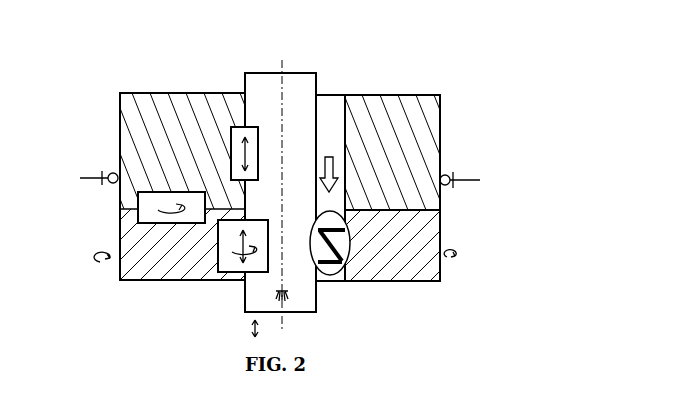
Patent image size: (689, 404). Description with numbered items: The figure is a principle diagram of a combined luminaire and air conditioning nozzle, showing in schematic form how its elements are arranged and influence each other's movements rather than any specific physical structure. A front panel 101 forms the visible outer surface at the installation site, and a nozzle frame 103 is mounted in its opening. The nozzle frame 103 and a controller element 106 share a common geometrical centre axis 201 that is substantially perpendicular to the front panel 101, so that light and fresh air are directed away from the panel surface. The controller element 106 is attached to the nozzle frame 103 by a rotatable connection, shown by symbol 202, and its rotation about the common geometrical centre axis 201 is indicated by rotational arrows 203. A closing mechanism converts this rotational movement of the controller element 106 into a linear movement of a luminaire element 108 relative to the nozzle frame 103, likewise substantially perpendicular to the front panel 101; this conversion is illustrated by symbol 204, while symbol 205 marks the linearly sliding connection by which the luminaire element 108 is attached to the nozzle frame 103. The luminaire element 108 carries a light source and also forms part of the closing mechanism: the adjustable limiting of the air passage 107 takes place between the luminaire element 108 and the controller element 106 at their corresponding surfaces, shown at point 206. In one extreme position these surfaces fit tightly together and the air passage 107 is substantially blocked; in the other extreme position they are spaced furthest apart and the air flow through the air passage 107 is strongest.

The front panel 101 is at (470, 180).
The nozzle frame 103 is at (424, 93).
The controller element 106 is at (441, 228).
The air passage 107 is at (333, 99).
The luminaire element 108 is at (243, 305).
The common geometrical centre axis 201 is at (282, 72).
The rotatable connection 202 is at (122, 200).
The rotational arrows 203 is at (446, 266).
The conversion symbol 204 is at (218, 266).
The linearly sliding connection 205 is at (231, 134).
The corresponding surfaces 206 is at (352, 266).